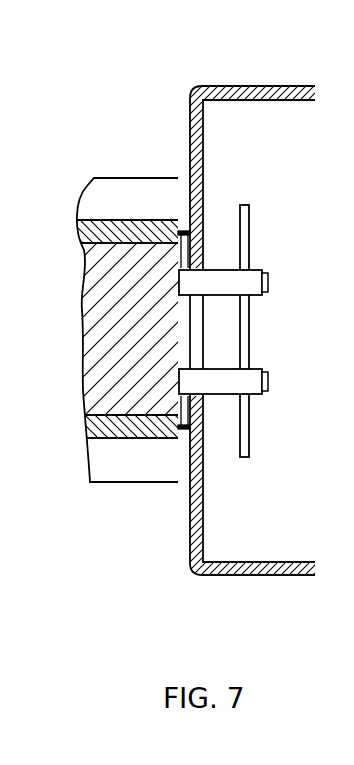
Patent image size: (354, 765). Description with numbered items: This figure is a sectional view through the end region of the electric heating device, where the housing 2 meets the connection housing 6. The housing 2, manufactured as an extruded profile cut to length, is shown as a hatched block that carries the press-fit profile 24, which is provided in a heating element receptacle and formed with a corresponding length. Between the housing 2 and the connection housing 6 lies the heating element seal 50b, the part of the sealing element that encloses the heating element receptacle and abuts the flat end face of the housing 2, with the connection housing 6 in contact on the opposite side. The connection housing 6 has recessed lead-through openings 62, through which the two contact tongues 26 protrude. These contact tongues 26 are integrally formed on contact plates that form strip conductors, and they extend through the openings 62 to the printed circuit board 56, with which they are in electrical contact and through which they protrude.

The housing 2 is at (107, 171).
The connection housing 6 is at (326, 82).
The press-fit profile 24 is at (78, 311).
The contact tongues 26 is at (268, 282).
The heating element seal 50b is at (183, 230).
The printed circuit board 56 is at (250, 222).
The recessed lead-through openings 62 is at (213, 263).